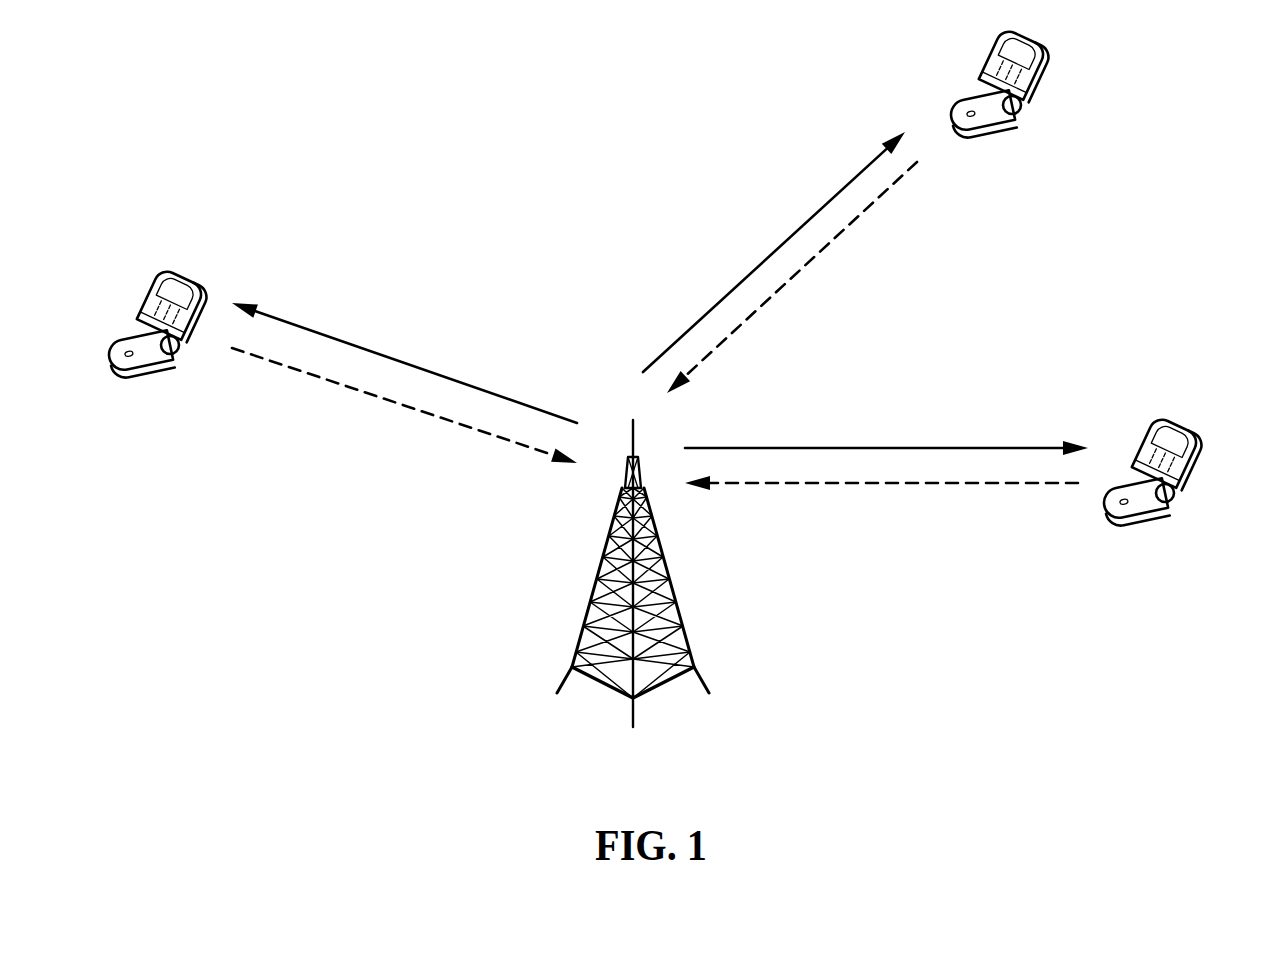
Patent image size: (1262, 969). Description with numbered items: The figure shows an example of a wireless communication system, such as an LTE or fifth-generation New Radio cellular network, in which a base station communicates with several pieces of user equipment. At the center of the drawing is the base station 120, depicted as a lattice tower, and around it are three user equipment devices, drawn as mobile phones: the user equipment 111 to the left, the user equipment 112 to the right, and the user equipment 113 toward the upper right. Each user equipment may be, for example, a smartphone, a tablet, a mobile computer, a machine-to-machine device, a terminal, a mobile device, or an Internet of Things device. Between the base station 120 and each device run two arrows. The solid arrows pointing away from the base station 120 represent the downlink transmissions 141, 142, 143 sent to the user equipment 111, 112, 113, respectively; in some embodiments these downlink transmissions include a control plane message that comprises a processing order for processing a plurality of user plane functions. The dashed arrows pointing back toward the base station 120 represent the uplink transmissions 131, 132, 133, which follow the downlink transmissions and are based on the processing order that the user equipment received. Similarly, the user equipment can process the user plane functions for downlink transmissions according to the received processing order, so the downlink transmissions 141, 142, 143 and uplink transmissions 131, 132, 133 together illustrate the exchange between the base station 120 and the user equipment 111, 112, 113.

The user equipment 111 is at (169, 358).
The user equipment 112 is at (1164, 505).
The user equipment 113 is at (1012, 117).
The base station 120 is at (702, 573).
The uplink transmission 131 is at (404, 420).
The uplink transmission 132 is at (881, 523).
The uplink transmission 133 is at (809, 277).
The downlink transmission 141 is at (404, 358).
The downlink transmission 142 is at (886, 411).
The downlink transmission 143 is at (774, 252).